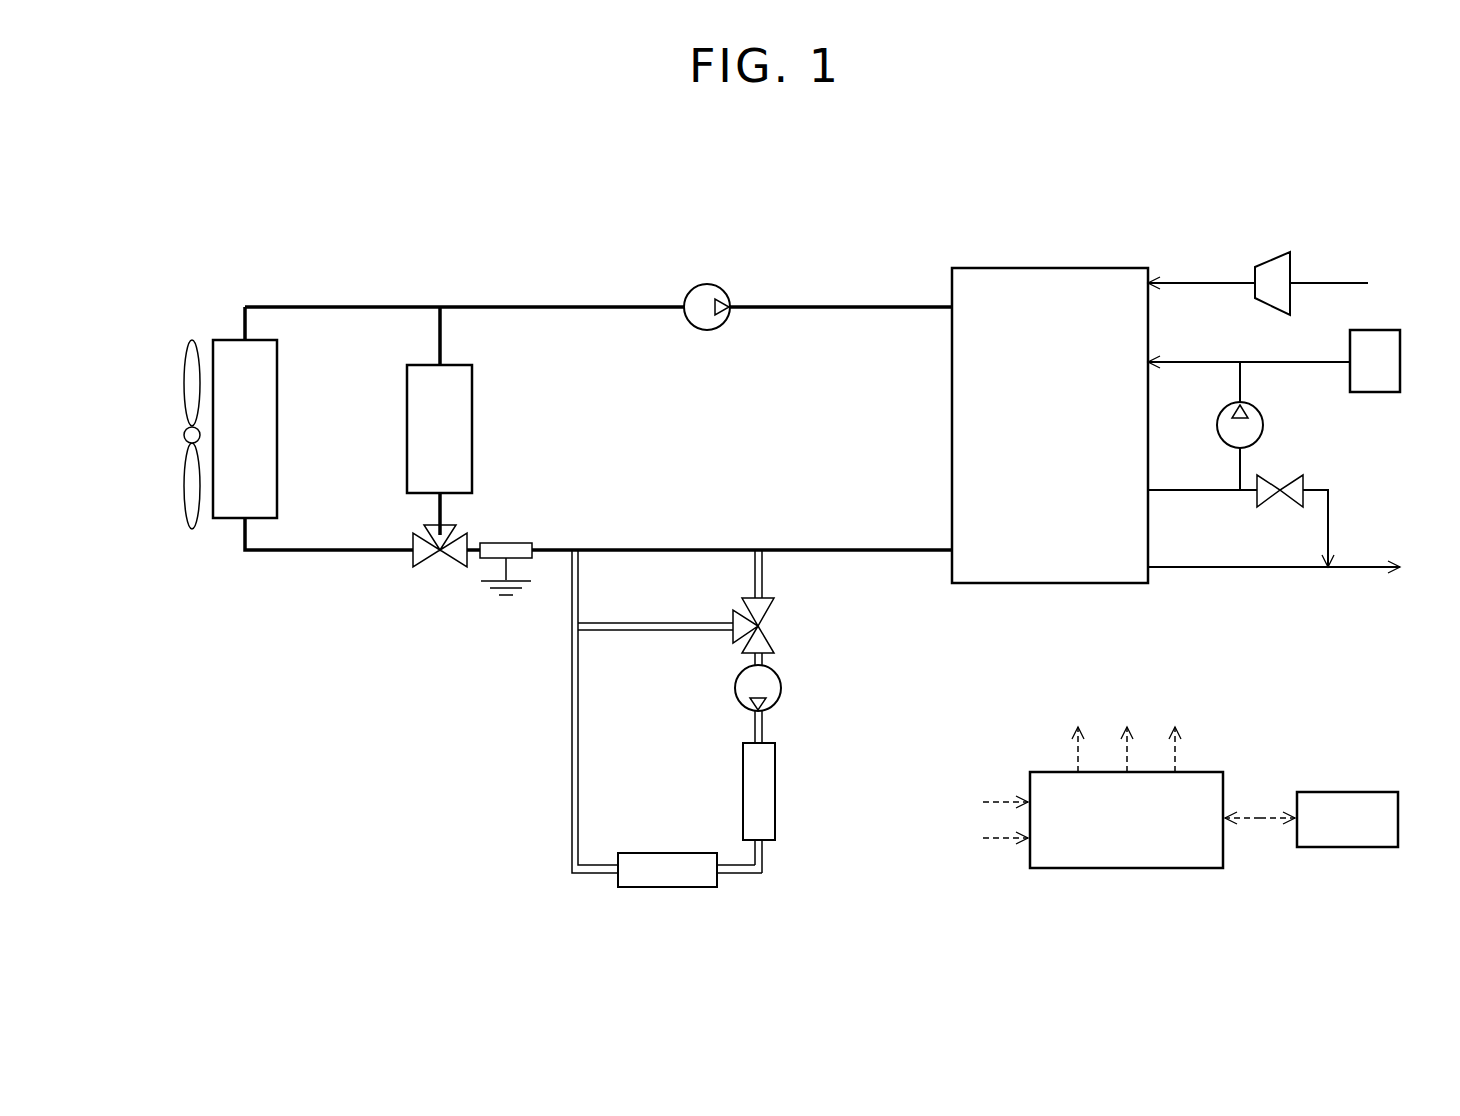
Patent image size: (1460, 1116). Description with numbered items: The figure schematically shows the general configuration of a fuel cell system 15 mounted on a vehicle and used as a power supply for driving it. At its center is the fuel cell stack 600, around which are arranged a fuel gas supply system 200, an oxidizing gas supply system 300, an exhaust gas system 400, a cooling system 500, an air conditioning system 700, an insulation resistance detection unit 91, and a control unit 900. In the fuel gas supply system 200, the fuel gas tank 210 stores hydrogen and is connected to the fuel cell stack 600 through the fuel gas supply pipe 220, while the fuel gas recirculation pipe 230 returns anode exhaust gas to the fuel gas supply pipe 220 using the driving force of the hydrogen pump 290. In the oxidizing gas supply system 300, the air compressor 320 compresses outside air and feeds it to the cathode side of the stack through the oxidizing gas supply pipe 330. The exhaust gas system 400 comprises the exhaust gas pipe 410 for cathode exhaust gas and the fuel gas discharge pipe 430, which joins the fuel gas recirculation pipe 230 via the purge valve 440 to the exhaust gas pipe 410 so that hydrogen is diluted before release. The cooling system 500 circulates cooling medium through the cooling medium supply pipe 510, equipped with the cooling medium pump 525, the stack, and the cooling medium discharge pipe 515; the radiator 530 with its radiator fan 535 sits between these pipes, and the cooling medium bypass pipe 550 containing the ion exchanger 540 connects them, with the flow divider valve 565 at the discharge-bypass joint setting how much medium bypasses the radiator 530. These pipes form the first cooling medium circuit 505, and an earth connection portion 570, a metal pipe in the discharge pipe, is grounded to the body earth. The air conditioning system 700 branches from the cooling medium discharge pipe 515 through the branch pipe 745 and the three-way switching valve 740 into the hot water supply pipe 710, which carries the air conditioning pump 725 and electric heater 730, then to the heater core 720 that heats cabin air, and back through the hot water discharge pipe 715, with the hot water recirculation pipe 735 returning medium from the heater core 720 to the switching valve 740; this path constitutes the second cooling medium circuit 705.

The fuel cell system 15 is at (1124, 130).
The insulation resistance detection unit 91 is at (1350, 847).
The fuel gas supply system 200 is at (1301, 374).
The fuel gas tank 210 is at (1390, 330).
The fuel gas supply pipe 220 is at (1208, 362).
The fuel gas recirculation pipe 230 is at (1188, 490).
The hydrogen pump 290 is at (1264, 425).
The oxidizing gas supply system 300 is at (1258, 216).
The air compressor 320 is at (1270, 265).
The oxidizing gas supply pipe 330 is at (1213, 283).
The exhaust gas system 400 is at (1277, 564).
The exhaust gas pipe 410 is at (1272, 568).
The fuel gas discharge pipe 430 is at (1330, 527).
The purge valve 440 is at (1280, 497).
The cooling system 500 is at (517, 410).
The first cooling medium circuit 505 is at (543, 298).
The cooling medium supply pipe 510 is at (836, 305).
The cooling medium discharge pipe 515 is at (862, 548).
The cooling medium pump 525 is at (703, 284).
The radiator 530 is at (278, 432).
The radiator fan 535 is at (184, 437).
The ion exchanger 540 is at (473, 430).
The cooling medium bypass pipe 550 is at (448, 330).
The flow divider valve 565 is at (440, 566).
The earth connection portion 570 is at (506, 542).
The fuel cell stack 600 is at (1047, 268).
The air conditioning system 700 is at (626, 718).
The second cooling medium circuit 705 is at (560, 683).
The hot water supply pipe 710 is at (765, 728).
The hot water discharge pipe 715 is at (572, 792).
The heater core 720 is at (666, 852).
The air conditioning pump 725 is at (782, 688).
The electric heater 730 is at (776, 790).
The hot water recirculation pipe 735 is at (655, 632).
The switching valve 740 is at (784, 626).
The branch pipe 745 is at (765, 573).
The control unit 900 is at (1127, 868).